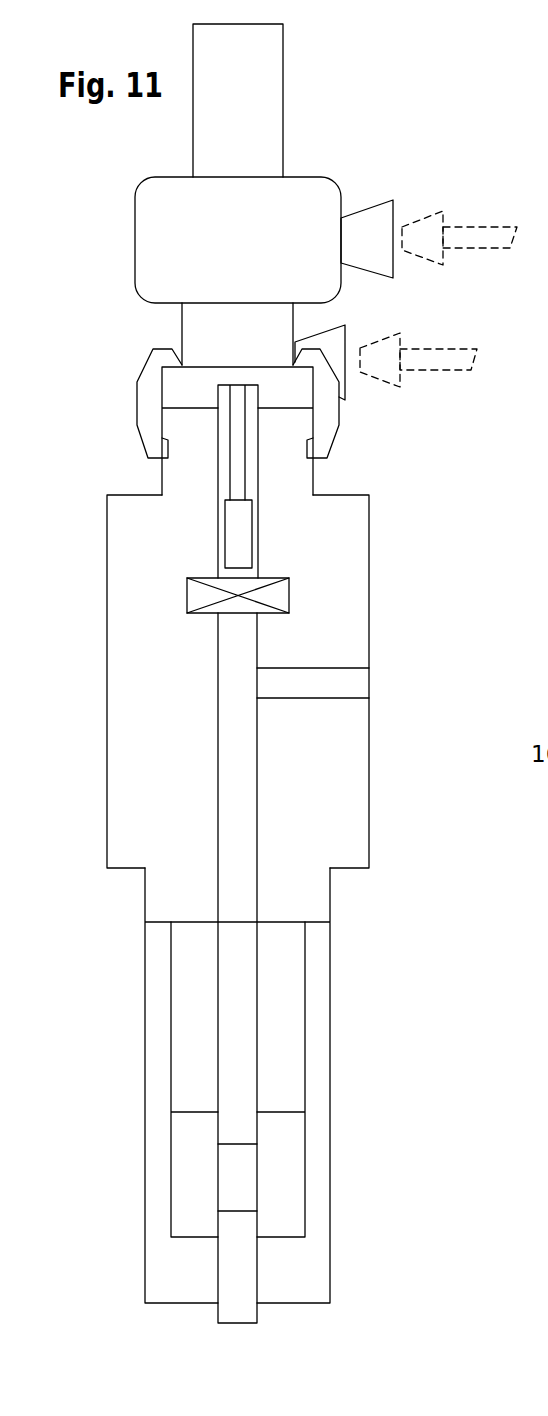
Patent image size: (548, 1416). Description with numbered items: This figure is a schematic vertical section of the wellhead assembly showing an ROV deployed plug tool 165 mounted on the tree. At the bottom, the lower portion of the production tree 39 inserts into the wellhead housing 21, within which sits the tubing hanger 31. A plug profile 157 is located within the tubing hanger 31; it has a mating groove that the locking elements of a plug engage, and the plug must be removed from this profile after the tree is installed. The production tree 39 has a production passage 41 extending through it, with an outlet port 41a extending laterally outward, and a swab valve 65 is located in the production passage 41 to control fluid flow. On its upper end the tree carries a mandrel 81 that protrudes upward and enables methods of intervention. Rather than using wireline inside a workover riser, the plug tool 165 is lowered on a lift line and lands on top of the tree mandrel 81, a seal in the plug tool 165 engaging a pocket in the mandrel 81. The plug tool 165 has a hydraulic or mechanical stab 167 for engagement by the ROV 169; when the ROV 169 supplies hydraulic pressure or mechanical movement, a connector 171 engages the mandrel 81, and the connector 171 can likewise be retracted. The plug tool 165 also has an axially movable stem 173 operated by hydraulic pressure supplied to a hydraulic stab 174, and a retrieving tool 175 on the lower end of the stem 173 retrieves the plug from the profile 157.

The ROV deployed plug tool 165 is at (275, 85).
The hydraulic stab 174 is at (393, 205).
The ROV 169 is at (455, 238).
The hydraulic or mechanical stab 167 is at (347, 330).
The connector 171 is at (342, 413).
The mandrel 81 is at (182, 425).
The stem 173 is at (230, 475).
The retrieving tool 175 is at (245, 535).
The swab valve 65 is at (187, 593).
The production tree 39 is at (358, 758).
The outlet port 41a is at (358, 684).
The production passage 41 is at (252, 708).
The wellhead housing 21 is at (320, 1040).
The tubing hanger 31 is at (285, 1149).
The plug profile 157 is at (229, 1181).